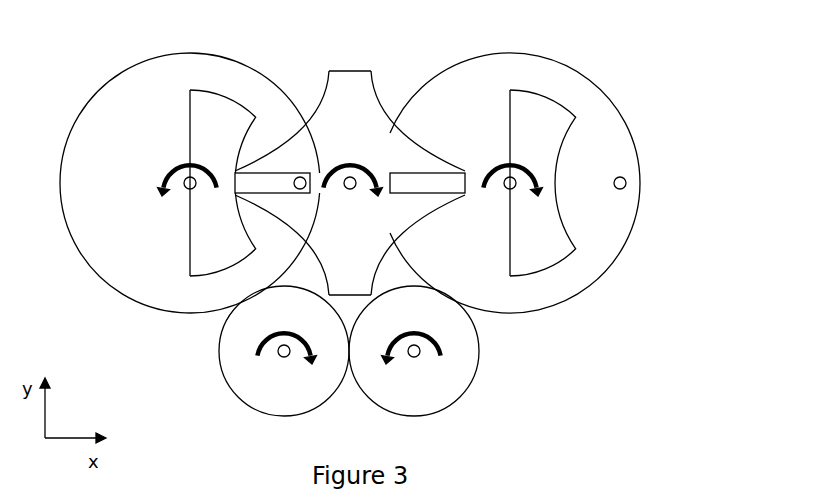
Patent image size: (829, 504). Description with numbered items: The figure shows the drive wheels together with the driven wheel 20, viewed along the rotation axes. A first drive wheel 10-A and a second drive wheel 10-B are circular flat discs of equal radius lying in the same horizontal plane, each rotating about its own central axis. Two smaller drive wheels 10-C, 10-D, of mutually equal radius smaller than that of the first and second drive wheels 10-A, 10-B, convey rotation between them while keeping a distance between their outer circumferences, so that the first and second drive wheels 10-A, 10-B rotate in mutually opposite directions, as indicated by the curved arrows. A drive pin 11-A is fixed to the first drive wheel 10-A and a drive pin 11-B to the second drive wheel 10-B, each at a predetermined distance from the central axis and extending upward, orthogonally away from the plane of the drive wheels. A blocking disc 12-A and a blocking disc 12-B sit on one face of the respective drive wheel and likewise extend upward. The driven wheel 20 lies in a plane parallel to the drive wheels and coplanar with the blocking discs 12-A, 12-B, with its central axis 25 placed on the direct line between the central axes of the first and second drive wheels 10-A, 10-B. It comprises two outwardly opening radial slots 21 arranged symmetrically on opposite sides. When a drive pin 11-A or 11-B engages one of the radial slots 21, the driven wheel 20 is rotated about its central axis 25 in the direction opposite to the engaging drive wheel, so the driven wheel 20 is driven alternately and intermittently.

The first drive wheel 10-A is at (128, 100).
The second drive wheel 10-B is at (560, 72).
The smaller drive wheel 10-C is at (258, 377).
The smaller drive wheel 10-D is at (457, 368).
The drive pin 11-A is at (306, 190).
The drive pin 11-B is at (627, 183).
The blocking disc 12-A is at (212, 236).
The blocking disc 12-B is at (520, 253).
The driven wheel 20 is at (350, 83).
The radial slot 21 is at (277, 181).
The central axis of the driven wheel 25 is at (346, 172).